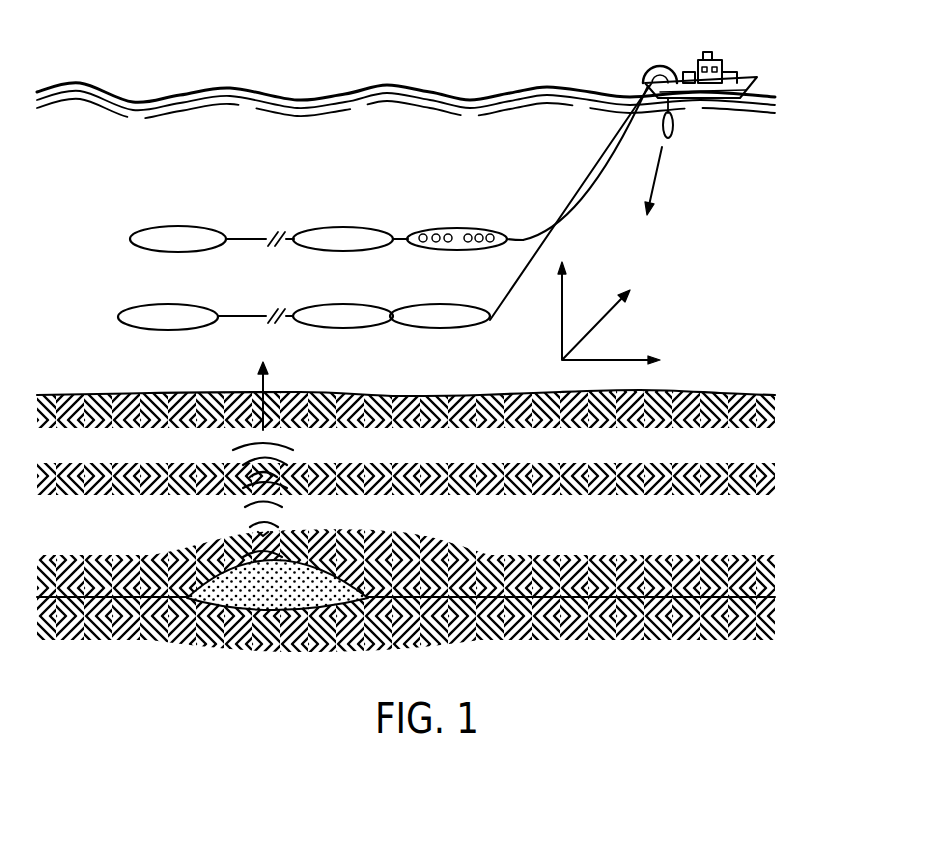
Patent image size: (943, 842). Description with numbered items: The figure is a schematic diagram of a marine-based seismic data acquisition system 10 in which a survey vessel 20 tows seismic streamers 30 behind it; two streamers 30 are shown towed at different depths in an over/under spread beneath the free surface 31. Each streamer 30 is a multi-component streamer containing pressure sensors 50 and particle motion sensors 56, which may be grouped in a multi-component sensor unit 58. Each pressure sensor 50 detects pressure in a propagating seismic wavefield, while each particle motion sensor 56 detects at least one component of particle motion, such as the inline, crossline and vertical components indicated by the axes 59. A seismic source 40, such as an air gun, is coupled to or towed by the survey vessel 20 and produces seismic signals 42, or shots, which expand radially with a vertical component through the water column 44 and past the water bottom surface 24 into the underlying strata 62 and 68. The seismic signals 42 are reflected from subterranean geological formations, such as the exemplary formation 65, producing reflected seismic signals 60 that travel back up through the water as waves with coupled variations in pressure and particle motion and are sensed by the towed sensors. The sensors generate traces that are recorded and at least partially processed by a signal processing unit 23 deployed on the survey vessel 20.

The marine-based seismic data acquisition system 10 is at (210, 60).
The survey vessel 20 is at (740, 74).
The signal processing unit 23 is at (685, 72).
The water bottom surface 24 is at (716, 392).
The seismic streamer 30 is at (613, 167).
The free surface 31 is at (350, 88).
The seismic source 40 is at (673, 127).
The seismic signal 42 is at (658, 180).
The water column 44 is at (723, 272).
The pressure sensor 50 is at (448, 234).
The particle motion sensor 56 is at (490, 234).
The multi-component sensor unit 58 is at (142, 230).
The axes 59 is at (548, 353).
The reflected seismic signal 60 is at (240, 512).
The strata 62 is at (487, 568).
The formation 65 is at (252, 601).
The strata 68 is at (653, 628).